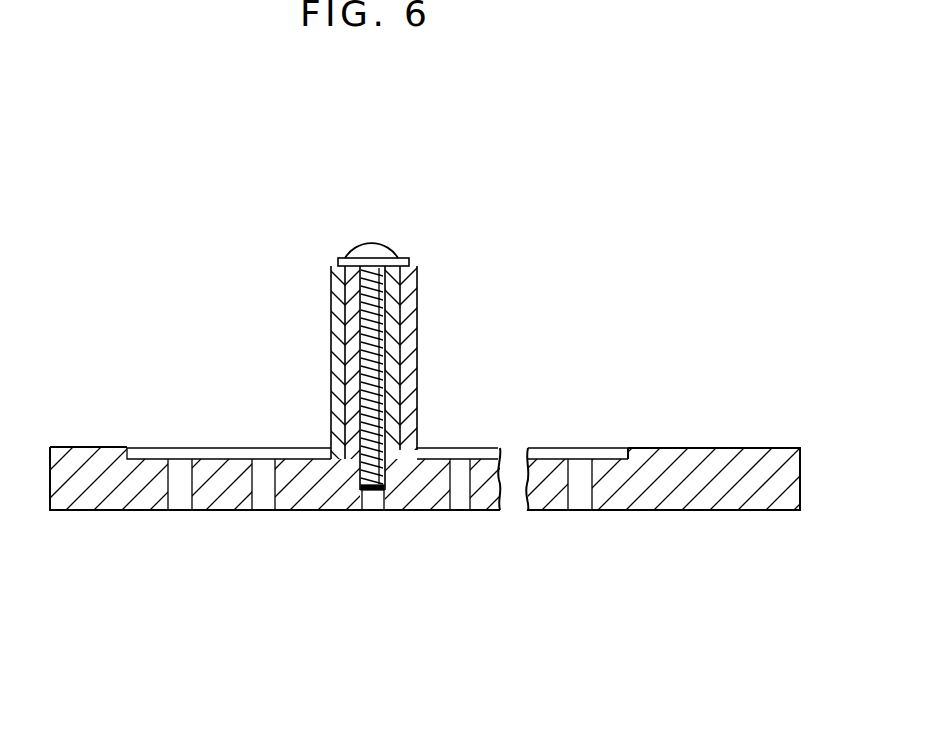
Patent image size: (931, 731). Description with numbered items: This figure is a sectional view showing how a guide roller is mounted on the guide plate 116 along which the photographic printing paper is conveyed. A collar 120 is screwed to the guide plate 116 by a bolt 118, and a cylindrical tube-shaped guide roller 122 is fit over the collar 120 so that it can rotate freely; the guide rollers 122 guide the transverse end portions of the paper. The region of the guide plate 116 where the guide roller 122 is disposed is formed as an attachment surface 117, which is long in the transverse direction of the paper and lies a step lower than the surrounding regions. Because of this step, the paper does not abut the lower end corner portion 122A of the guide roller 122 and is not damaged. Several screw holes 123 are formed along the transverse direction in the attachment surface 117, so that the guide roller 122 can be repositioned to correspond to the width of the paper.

The guide plate 116 is at (85, 447).
The attachment surface 117 is at (228, 455).
The bolt 118 is at (372, 250).
The collar 120 is at (412, 278).
The guide roller 122 is at (413, 360).
The lower end corner portion 122A is at (428, 447).
The screw hole 123 is at (172, 490).